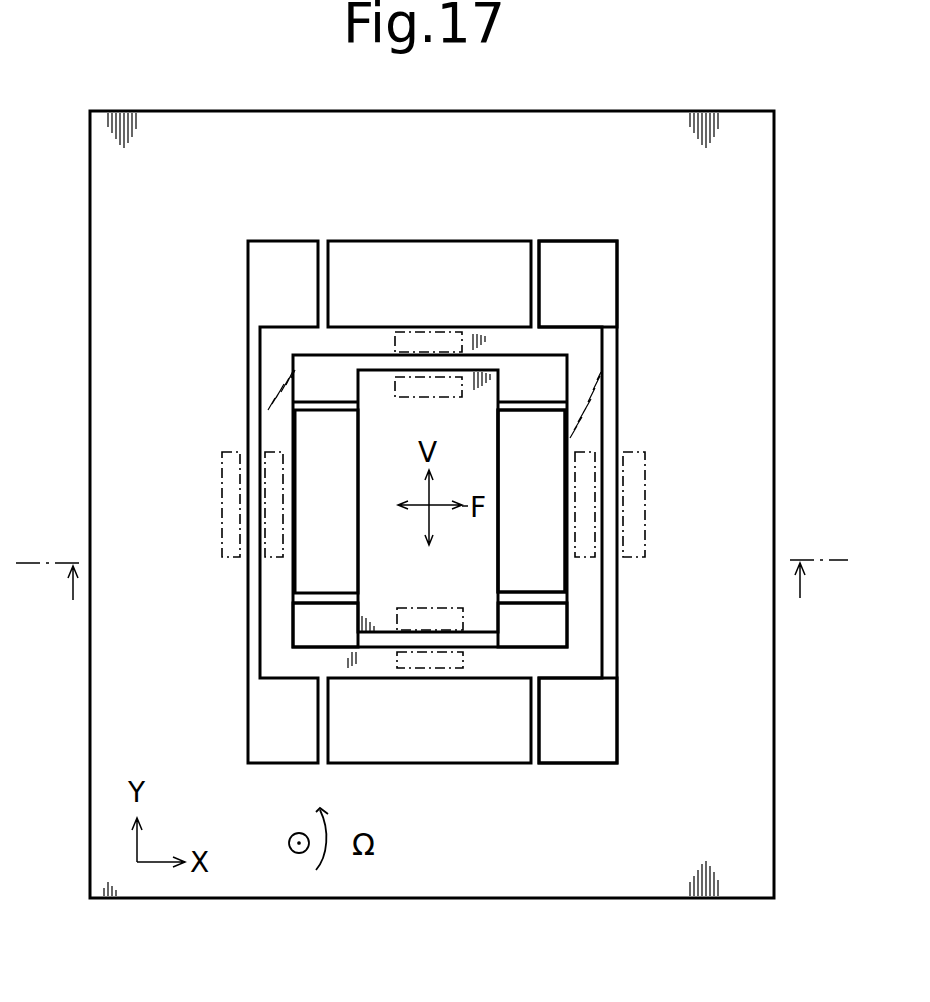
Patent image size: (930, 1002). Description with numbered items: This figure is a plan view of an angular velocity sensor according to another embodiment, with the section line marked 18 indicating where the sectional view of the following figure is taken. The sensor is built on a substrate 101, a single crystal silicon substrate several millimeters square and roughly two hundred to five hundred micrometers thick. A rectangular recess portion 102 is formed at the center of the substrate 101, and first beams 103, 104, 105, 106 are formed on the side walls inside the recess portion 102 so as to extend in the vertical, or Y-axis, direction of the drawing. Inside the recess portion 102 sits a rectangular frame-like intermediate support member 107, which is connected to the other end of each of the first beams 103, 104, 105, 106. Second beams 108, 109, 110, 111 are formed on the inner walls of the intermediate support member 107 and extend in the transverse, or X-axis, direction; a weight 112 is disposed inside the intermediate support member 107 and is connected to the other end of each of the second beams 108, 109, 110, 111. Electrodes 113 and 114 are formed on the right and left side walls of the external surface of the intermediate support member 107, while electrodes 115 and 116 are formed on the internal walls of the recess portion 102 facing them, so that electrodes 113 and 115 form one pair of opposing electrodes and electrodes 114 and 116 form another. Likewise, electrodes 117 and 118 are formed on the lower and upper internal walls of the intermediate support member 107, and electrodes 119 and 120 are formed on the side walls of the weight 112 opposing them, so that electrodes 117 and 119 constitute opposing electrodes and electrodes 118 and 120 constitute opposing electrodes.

The substrate 101 is at (760, 799).
The recess portion 102 is at (617, 690).
The first beam 103 is at (333, 740).
The first beam 104 is at (548, 740).
The first beam 105 is at (333, 290).
The first beam 106 is at (540, 292).
The intermediate support member 107 is at (432, 680).
The second beam 108 is at (323, 410).
The second beam 109 is at (323, 603).
The second beam 110 is at (520, 410).
The second beam 111 is at (522, 603).
The weight 112 is at (500, 485).
The electrode 113 is at (283, 513).
The electrode 114 is at (575, 530).
The electrode 115 is at (222, 496).
The electrode 116 is at (645, 470).
The electrode 117 is at (463, 660).
The electrode 118 is at (440, 332).
The electrode 119 is at (410, 608).
The electrode 120 is at (414, 397).
The section line of FIG. 18 is at (432, 581).